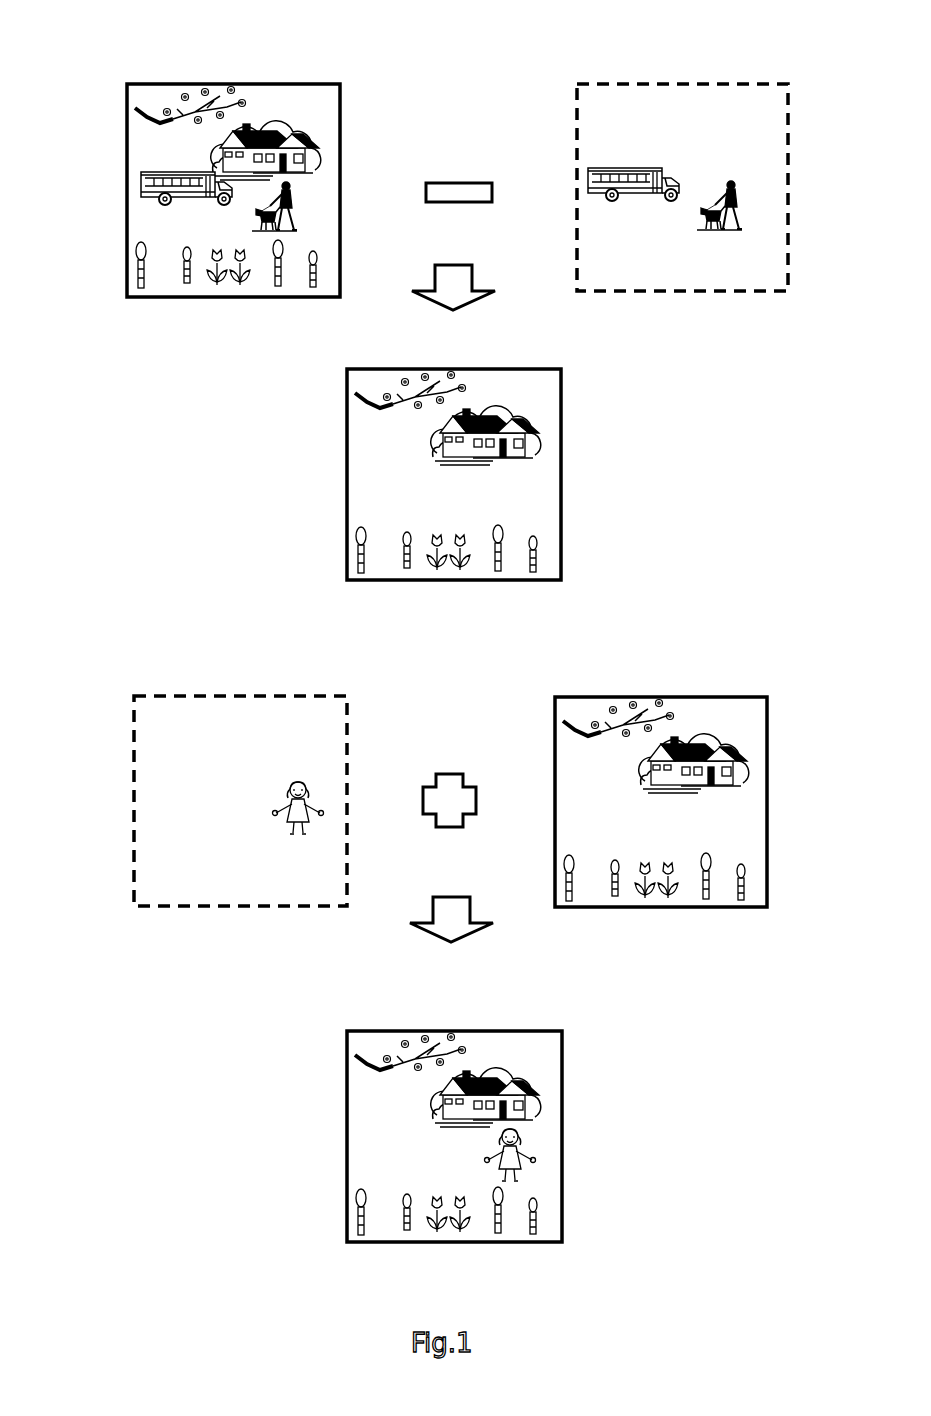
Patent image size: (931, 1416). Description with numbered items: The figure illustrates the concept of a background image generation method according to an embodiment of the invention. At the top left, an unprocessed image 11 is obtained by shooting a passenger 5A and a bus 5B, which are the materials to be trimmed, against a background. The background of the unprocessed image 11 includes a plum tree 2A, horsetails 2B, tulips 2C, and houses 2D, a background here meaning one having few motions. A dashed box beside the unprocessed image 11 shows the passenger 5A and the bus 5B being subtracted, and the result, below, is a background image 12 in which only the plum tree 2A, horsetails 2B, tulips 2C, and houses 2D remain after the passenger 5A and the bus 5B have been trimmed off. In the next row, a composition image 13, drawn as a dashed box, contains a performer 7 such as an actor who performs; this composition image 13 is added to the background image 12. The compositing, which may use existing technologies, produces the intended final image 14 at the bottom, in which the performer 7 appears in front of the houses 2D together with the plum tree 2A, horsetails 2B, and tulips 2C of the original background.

The unprocessed image 11 is at (365, 90).
The background image 12 is at (583, 370).
The composition image 13 is at (134, 784).
The final image 14 is at (387, 1014).
The plum tree 2A is at (200, 88).
The horsetails 2B is at (163, 270).
The tulips 2C is at (232, 284).
The houses 2D is at (272, 136).
The passenger 5A is at (262, 217).
The bus 5B is at (147, 187).
The performer 7 is at (297, 780).